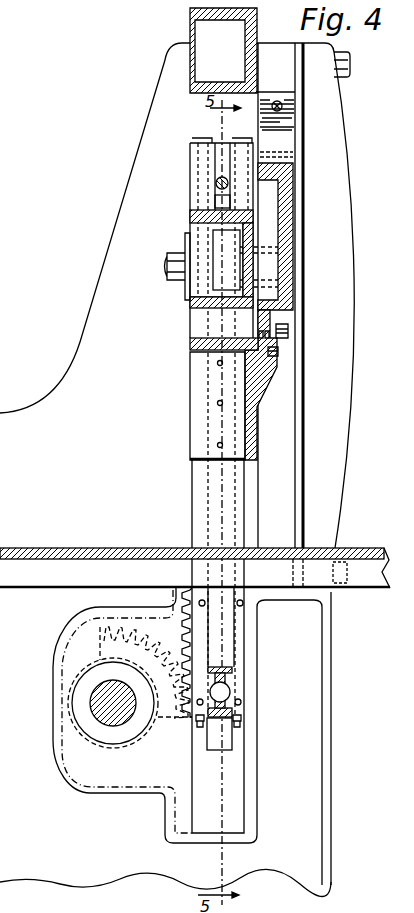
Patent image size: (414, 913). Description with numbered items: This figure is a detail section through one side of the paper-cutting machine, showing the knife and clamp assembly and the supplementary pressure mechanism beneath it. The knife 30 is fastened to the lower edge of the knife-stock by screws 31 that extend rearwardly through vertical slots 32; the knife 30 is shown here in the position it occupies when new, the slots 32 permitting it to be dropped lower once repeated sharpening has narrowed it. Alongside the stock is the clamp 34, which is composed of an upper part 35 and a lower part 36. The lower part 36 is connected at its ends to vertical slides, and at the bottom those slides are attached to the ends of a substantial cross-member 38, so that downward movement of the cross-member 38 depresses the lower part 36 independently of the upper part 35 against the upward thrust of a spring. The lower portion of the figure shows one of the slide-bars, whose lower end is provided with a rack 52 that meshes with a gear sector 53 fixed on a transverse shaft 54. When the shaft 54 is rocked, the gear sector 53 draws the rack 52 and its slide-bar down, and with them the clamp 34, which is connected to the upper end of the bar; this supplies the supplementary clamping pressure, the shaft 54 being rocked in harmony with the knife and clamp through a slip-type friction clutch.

The knife 30 is at (262, 390).
The screws 31 is at (289, 334).
The vertical slots 32 is at (279, 352).
The clamp 34 is at (190, 339).
The upper part 35 is at (191, 216).
The lower part 36 is at (190, 388).
The cross-member 38 is at (213, 661).
The racks 52 is at (175, 584).
The gear sectors 53 is at (110, 652).
The transverse shaft 54 is at (123, 724).